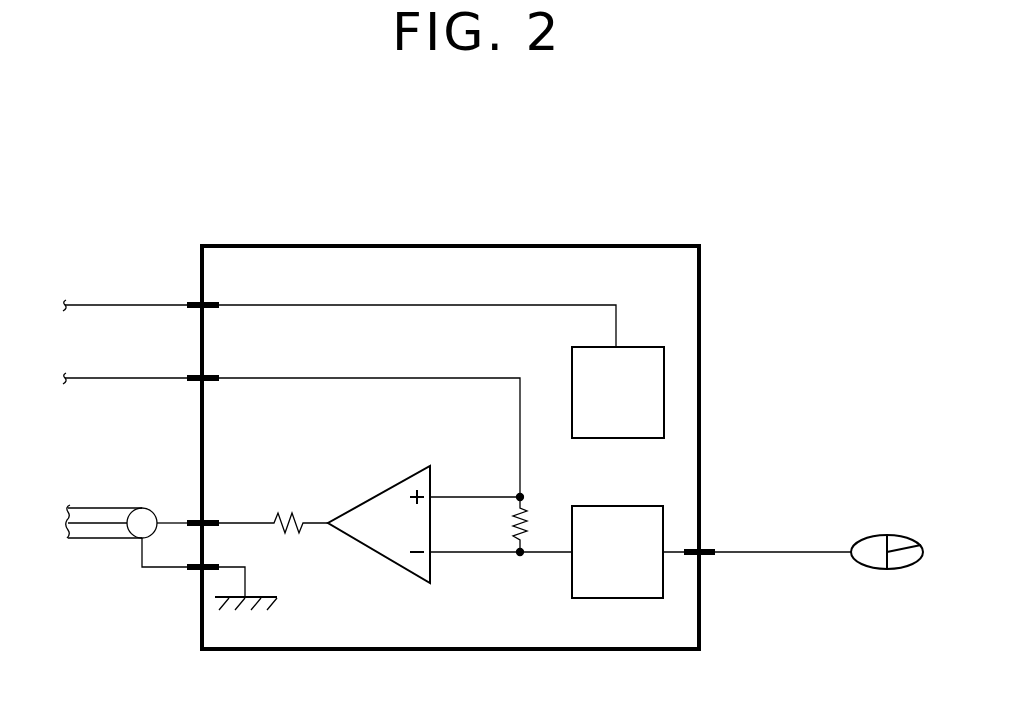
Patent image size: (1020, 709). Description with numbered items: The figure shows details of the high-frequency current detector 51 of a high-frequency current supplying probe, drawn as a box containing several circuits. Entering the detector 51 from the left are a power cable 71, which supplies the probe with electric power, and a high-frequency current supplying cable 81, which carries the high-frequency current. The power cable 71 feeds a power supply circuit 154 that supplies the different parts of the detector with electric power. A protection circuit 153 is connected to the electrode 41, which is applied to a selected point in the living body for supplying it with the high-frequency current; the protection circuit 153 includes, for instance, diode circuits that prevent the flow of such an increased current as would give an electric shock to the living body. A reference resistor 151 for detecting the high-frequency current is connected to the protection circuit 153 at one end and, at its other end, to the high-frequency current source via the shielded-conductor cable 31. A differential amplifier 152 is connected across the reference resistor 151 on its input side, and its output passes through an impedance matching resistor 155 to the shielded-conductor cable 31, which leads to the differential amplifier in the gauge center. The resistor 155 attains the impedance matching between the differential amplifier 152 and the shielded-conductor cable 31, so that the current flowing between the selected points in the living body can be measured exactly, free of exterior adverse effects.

The current detector 51 is at (630, 246).
The power cable 71 is at (123, 301).
The high-frequency current supplying cable 81 is at (125, 383).
The power supply circuit 154 is at (641, 409).
The protection circuit 153 is at (641, 568).
The differential amplifier 152 is at (398, 479).
The reference resistor 151 is at (513, 526).
The impedance matching resistor 155 is at (284, 510).
The shielded-conductor cable 31 is at (101, 540).
The electrode 41 is at (880, 534).